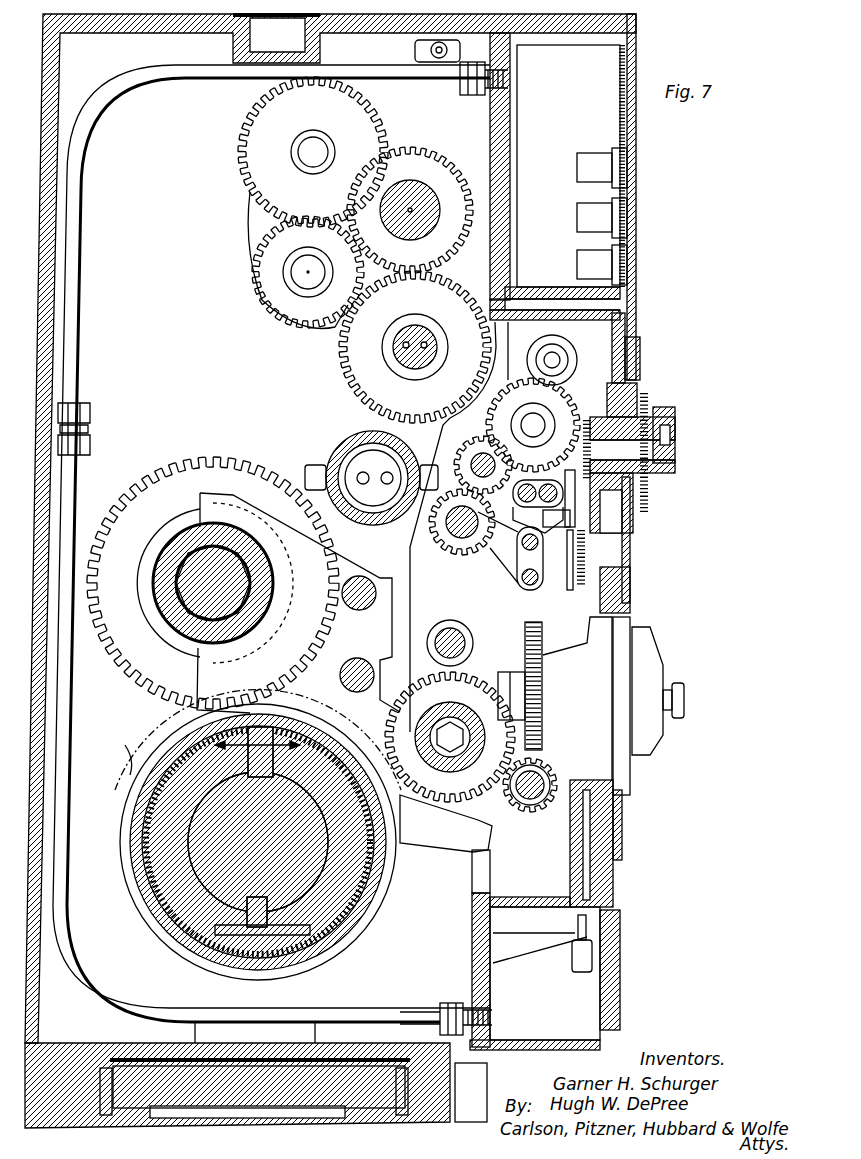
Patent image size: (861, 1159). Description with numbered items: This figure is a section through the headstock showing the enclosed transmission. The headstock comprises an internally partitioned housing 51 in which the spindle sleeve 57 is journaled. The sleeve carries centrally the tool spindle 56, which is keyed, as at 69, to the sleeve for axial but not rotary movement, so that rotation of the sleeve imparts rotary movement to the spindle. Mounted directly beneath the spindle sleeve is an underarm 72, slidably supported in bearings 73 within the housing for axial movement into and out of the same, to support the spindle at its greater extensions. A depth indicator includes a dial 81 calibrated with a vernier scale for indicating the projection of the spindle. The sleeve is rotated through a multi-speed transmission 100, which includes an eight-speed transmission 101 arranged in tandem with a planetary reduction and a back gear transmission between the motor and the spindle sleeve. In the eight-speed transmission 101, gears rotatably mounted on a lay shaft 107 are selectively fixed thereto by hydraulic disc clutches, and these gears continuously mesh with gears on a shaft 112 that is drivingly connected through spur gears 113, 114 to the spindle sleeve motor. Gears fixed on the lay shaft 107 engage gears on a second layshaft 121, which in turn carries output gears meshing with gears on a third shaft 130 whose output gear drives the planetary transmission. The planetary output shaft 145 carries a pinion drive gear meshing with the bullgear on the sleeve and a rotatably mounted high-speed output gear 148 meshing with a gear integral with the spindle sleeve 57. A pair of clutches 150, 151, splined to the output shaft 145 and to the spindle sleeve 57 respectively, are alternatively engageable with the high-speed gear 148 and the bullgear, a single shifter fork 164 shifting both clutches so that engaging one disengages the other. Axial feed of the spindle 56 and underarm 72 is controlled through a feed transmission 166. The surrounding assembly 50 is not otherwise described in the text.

The gear box housing 50 is at (625, 884).
The housing 51 is at (33, 966).
The tool spindle 56 is at (205, 868).
The spindle sleeve 57 is at (162, 845).
The key 69 is at (309, 740).
The underarm 72 is at (265, 1077).
The bearings 73 is at (340, 1068).
The dial 81 is at (650, 669).
The multi-speed transmission 100 is at (243, 380).
The eight-speed transmission 101 is at (325, 342).
The lay shaft 107 is at (415, 198).
The shaft 112 is at (298, 154).
The spur gear 113 is at (258, 126).
The spur gear 114 is at (268, 262).
The second layshaft 121 is at (403, 357).
The third shaft 130 is at (362, 458).
The output shaft 145 is at (200, 614).
The high-speed output gear 148 is at (255, 482).
The clutch 150 is at (160, 573).
The clutch 151 is at (150, 788).
The shifter fork 164 is at (213, 493).
The feed transmission 166 is at (451, 560).